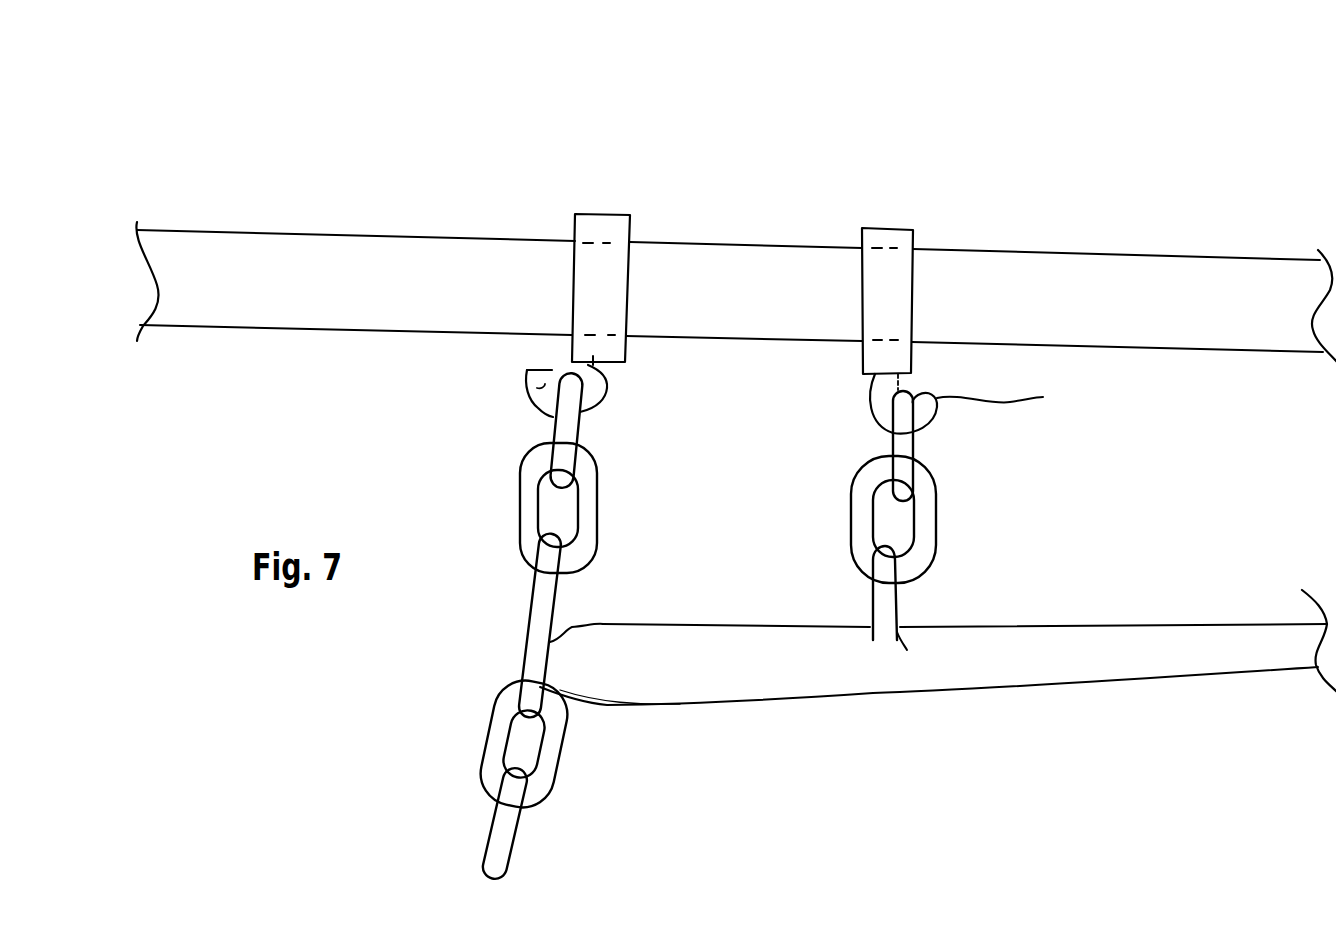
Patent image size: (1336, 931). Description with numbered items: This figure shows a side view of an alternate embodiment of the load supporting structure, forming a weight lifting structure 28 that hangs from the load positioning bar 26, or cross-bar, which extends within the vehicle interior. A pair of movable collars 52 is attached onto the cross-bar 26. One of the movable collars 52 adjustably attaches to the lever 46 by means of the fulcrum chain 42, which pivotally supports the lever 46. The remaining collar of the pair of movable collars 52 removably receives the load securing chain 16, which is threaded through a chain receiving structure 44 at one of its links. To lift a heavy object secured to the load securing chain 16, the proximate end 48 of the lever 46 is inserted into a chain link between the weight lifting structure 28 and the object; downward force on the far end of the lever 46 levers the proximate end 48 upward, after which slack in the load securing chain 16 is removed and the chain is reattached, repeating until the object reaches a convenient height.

The load securing chain 16 is at (520, 525).
The load positioning bar 26 is at (1153, 283).
The weight lifting structure 28 is at (878, 157).
The fulcrum chain 42 is at (923, 513).
The chain receiving structure 44 is at (527, 398).
The lever 46 is at (968, 670).
The proximate end 48 is at (612, 675).
The movable collars 52 is at (889, 274).